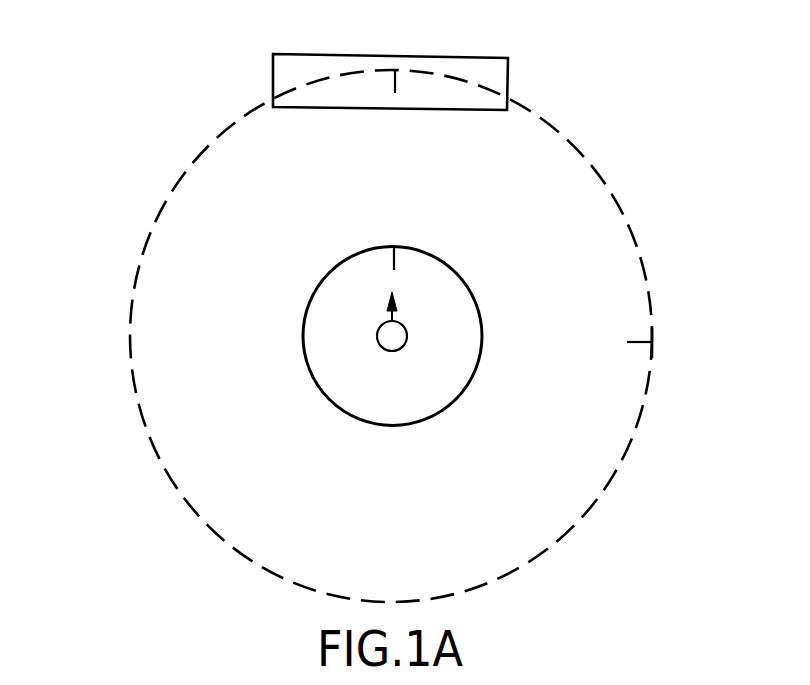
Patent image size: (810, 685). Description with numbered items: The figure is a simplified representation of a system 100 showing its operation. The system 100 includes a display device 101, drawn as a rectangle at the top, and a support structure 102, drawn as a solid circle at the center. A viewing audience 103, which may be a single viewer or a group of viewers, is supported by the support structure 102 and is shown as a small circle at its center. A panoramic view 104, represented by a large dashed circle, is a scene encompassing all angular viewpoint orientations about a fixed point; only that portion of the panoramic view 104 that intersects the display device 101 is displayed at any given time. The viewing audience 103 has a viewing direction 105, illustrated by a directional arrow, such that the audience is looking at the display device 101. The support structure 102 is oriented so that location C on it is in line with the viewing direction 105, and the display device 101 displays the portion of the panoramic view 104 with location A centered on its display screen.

The system 100 is at (626, 124).
The display device 101 is at (472, 56).
The support structure 102 is at (464, 281).
The viewing audience 103 is at (407, 336).
The panoramic view 104 is at (620, 462).
The viewing direction 105 is at (391, 305).